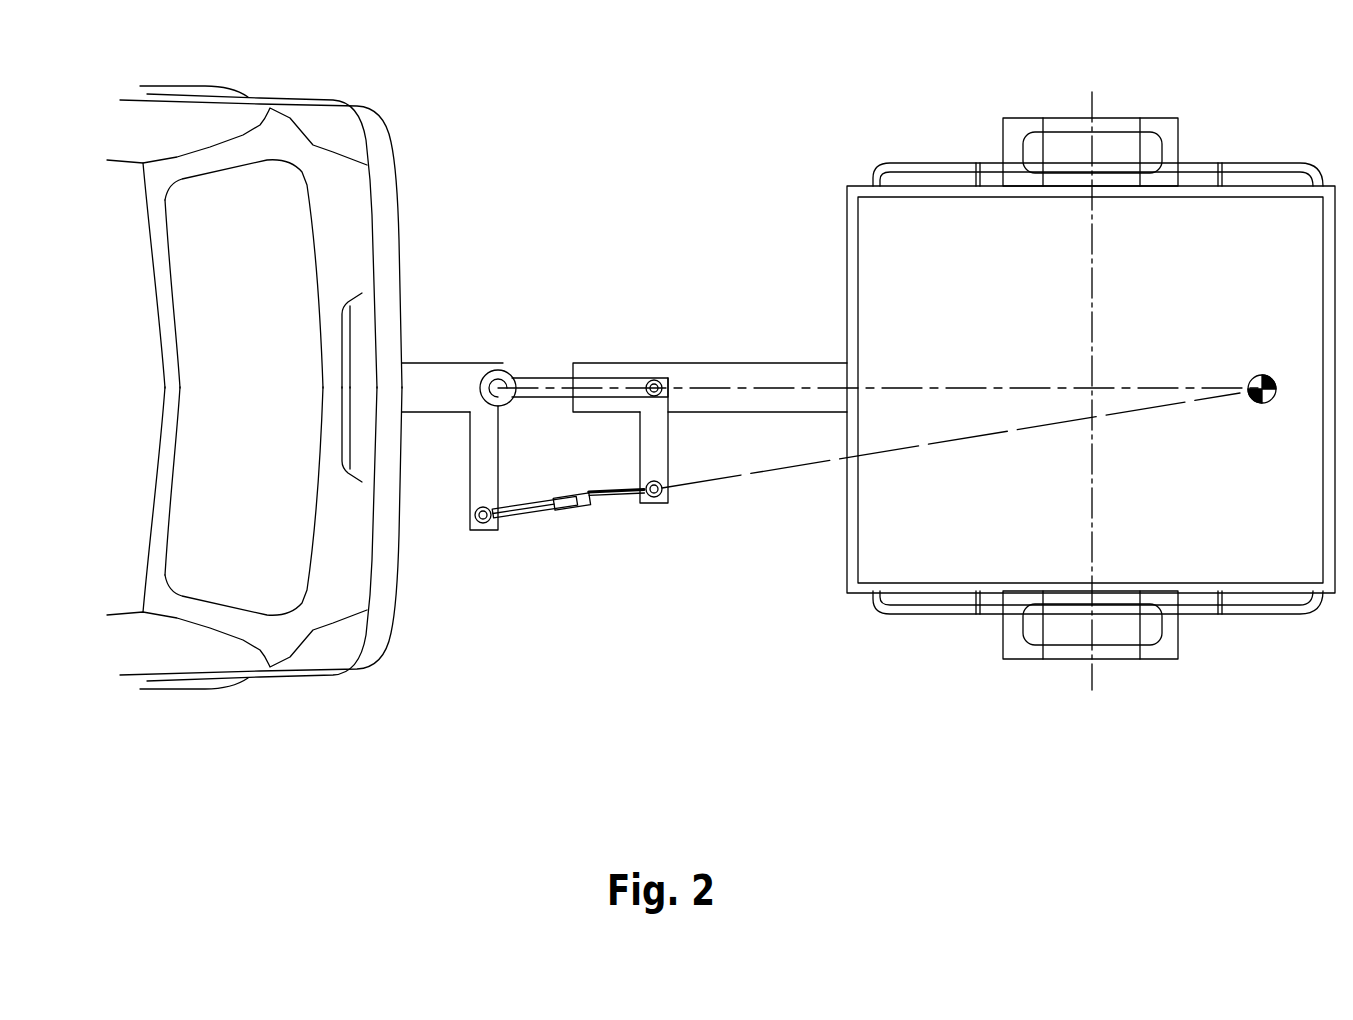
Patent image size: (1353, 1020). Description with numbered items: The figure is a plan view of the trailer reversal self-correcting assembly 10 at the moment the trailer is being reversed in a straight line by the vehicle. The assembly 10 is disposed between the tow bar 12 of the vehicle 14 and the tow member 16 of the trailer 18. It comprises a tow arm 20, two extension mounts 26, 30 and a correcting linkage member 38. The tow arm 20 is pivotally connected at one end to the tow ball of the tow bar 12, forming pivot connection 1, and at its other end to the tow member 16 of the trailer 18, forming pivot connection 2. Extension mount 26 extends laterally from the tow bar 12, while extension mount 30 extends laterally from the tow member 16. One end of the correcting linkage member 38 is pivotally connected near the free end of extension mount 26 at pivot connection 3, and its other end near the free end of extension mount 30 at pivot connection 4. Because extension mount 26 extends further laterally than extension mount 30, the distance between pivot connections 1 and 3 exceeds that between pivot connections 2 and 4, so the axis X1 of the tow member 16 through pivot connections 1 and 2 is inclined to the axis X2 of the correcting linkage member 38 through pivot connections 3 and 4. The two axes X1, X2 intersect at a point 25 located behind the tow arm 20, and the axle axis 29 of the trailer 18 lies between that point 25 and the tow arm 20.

The pivot connection 1 is at (497, 366).
The pivot connection 2 is at (665, 363).
The pivot connection 3 is at (497, 528).
The pivot connection 4 is at (667, 500).
The trailer reversal self-correcting assembly 10 is at (613, 158).
The tow bar 12 is at (440, 363).
The vehicle 14 is at (363, 652).
The tow member 16 is at (713, 363).
The trailer 18 is at (850, 594).
The tow arm 20 is at (553, 376).
The point (or line) 25 is at (1263, 375).
The extension mount 26 is at (470, 473).
The axle (or wheel) axis 29 is at (1097, 212).
The extension mount 30 is at (655, 453).
The correcting linkage member 38 is at (578, 508).
The axis of tow member X1 is at (783, 363).
The axis of correcting linkage member X2 is at (770, 468).